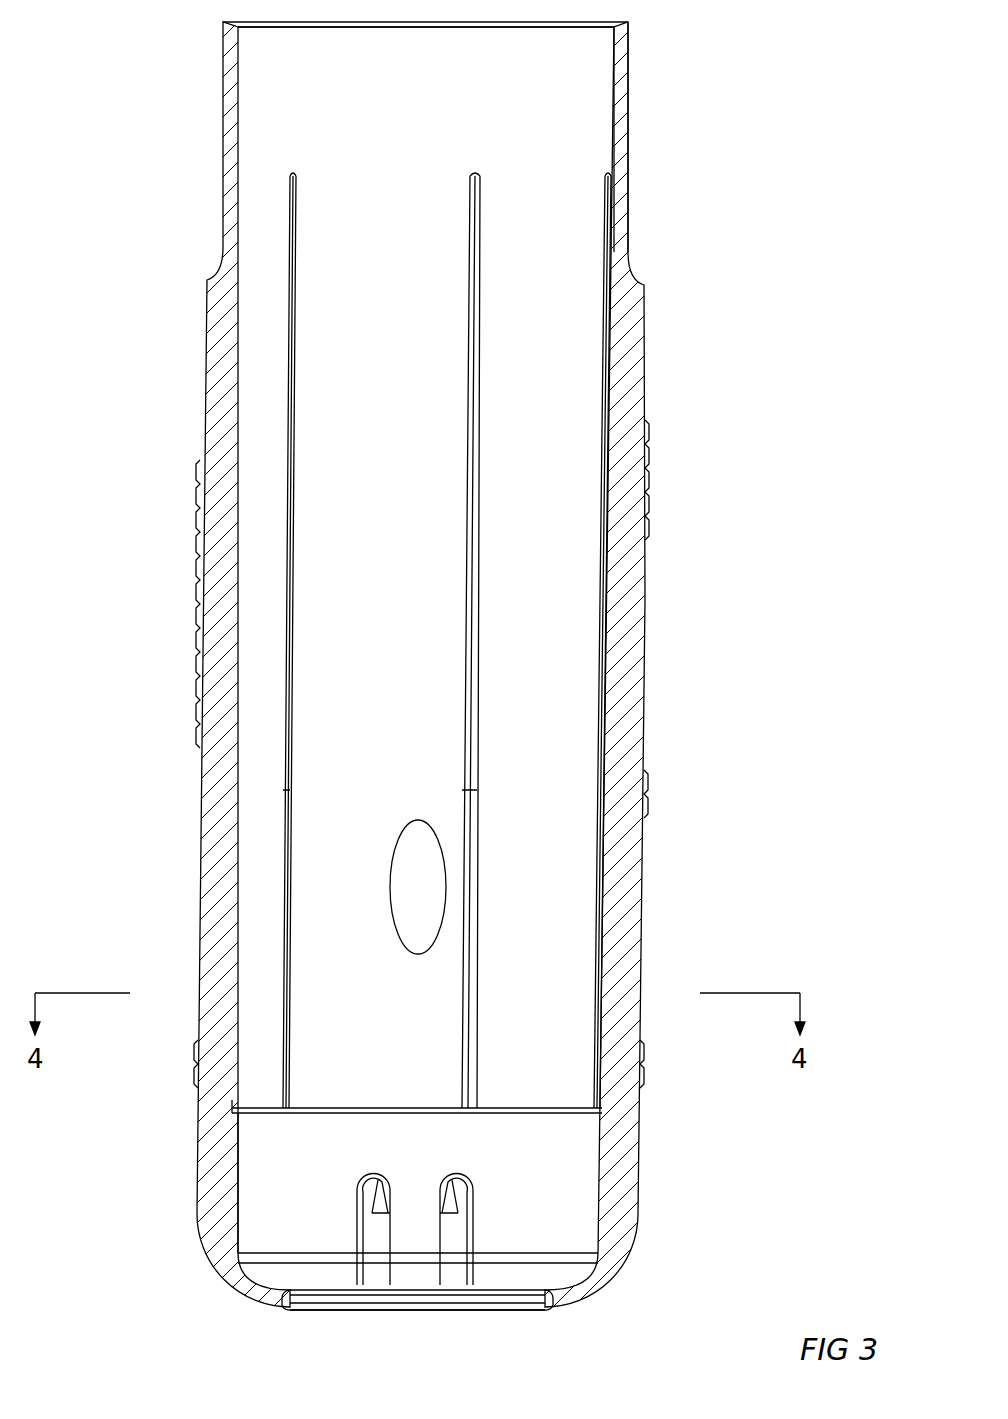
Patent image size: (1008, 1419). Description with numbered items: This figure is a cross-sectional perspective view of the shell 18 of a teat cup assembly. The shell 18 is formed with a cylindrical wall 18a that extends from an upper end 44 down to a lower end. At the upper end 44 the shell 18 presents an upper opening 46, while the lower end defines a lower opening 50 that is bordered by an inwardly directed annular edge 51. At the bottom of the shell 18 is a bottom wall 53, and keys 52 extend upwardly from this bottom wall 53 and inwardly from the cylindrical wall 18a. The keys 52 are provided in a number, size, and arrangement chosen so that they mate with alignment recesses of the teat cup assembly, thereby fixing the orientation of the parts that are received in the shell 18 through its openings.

The shell 18 is at (702, 335).
The cylindrical wall 18a is at (196, 777).
The upper end 44 is at (632, 115).
The upper opening 46 is at (555, 50).
The lower opening 50 is at (505, 1320).
The inwardly directed annular edge 51 is at (293, 1303).
The keys 52 is at (383, 1235).
The bottom wall 53 is at (503, 1275).